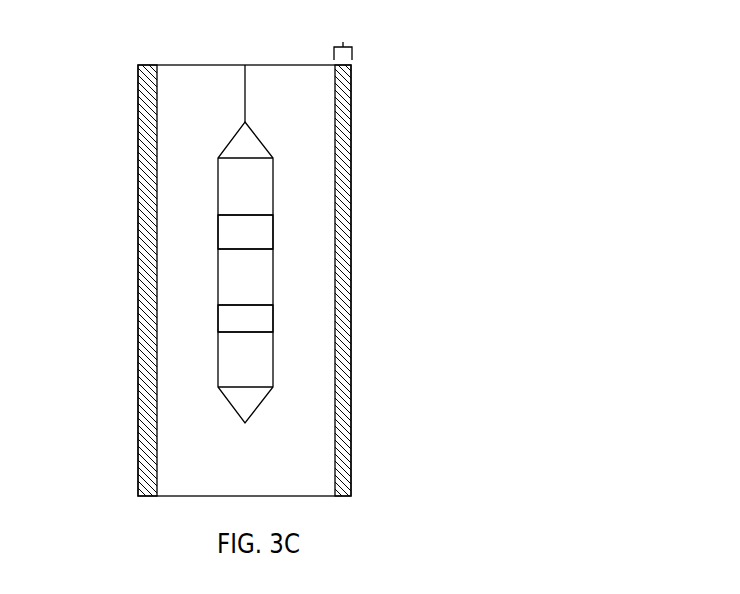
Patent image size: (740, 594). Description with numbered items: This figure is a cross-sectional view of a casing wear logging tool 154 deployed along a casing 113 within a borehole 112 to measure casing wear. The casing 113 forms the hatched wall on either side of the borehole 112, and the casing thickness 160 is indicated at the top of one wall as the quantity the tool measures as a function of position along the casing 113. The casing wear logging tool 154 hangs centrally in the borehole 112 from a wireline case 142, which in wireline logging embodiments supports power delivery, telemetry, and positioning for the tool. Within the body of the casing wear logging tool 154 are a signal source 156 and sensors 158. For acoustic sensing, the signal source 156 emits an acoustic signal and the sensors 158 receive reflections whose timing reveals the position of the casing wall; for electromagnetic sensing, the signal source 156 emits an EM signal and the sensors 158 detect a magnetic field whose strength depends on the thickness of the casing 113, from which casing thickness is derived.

The borehole 112 is at (187, 69).
The casing 113 is at (127, 137).
The casing thickness 160 is at (362, 33).
The wireline case 142 is at (259, 91).
The casing wear logging tool 154 is at (207, 197).
The signal source 156 is at (287, 229).
The sensors 158 is at (287, 316).